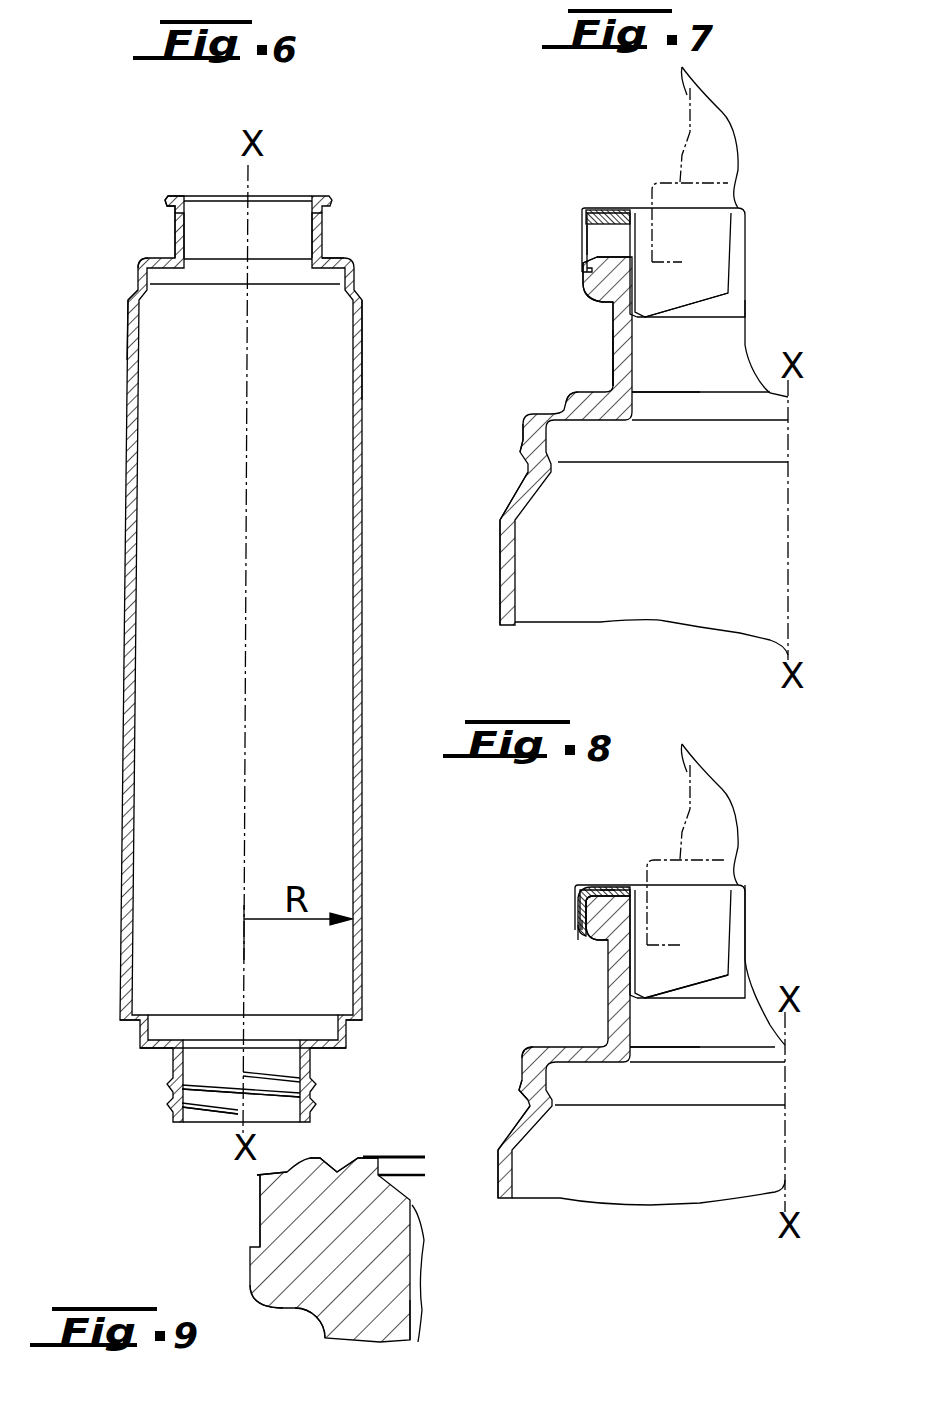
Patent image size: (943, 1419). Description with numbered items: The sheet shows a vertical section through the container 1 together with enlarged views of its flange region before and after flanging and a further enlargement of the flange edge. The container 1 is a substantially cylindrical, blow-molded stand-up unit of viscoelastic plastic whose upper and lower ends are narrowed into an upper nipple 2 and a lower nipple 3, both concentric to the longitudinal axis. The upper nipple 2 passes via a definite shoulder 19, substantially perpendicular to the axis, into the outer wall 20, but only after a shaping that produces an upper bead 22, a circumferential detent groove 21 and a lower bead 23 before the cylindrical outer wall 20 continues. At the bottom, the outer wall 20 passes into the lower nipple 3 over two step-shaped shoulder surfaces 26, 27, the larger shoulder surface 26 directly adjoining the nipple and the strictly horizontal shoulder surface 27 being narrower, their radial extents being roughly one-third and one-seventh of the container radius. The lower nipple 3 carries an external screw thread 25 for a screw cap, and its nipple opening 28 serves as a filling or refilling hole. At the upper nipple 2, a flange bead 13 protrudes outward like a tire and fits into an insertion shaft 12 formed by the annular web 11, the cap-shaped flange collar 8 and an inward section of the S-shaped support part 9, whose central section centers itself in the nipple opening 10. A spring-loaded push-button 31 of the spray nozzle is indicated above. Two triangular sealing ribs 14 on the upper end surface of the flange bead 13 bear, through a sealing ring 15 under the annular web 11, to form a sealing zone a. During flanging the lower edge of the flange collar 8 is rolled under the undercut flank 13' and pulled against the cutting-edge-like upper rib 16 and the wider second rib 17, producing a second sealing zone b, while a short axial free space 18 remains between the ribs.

In FIG. 6, the container 1 is at (112, 650).
In FIG. 7, the container 1 is at (482, 586).
In FIG. 6, the upper nipple 2 is at (175, 228).
In FIG. 7, the upper nipple 2 is at (610, 362).
In FIG. 9, the upper nipple 2 is at (378, 1325).
In FIG. 6, the lower nipple 3 is at (180, 1082).
In FIG. 7, the flange collar 8 is at (582, 237).
In FIG. 8, the flange collar 8 is at (580, 933).
In FIG. 7, the support part 9 is at (673, 303).
In FIG. 8, the support part 9 is at (680, 980).
In FIG. 6, the nipple opening 10 is at (228, 222).
In FIG. 7, the nipple opening 10 is at (673, 358).
In FIG. 8, the nipple opening 10 is at (710, 1025).
In FIG. 9, the nipple opening 10 is at (415, 1233).
In FIG. 7, the annular web 11 is at (608, 208).
In FIG. 8, the annular web 11 is at (588, 885).
In FIG. 9, the annular web 11 is at (394, 1166).
In FIG. 7, the insertion shaft 12 is at (593, 238).
In FIG. 6, the flange bead 13 is at (146, 154).
In FIG. 7, the flange bead 13 is at (525, 309).
In FIG. 8, the flange bead 13 is at (541, 873).
In FIG. 9, the flange bead 13 is at (376, 1250).
In FIG. 7, the undercut flank 13' is at (530, 357).
In FIG. 9, the undercut flank 13' is at (295, 1340).
In FIG. 7, the sealing rib 14 is at (592, 257).
In FIG. 9, the sealing rib 14 is at (312, 1165).
In FIG. 7, the sealing ring 15 is at (620, 210).
In FIG. 7, the upper rib 16 is at (587, 263).
In FIG. 9, the upper rib 16 is at (257, 1176).
In FIG. 7, the second rib 17 is at (592, 296).
In FIG. 9, the second rib 17 is at (250, 1278).
In FIG. 8, the free space 18 is at (576, 913).
In FIG. 9, the free space 18 is at (250, 1222).
In FIG. 6, the shoulder 19 is at (330, 254).
In FIG. 7, the shoulder 19 is at (655, 393).
In FIG. 8, the shoulder 19 is at (543, 1046).
In FIG. 6, the outer wall 20 is at (360, 335).
In FIG. 7, the outer wall 20 is at (500, 618).
In FIG. 8, the outer wall 20 is at (507, 1172).
In FIG. 6, the detent groove 21 is at (137, 282).
In FIG. 7, the detent groove 21 is at (530, 438).
In FIG. 8, the detent groove 21 is at (528, 1097).
In FIG. 6, the upper bead 22 is at (140, 265).
In FIG. 7, the upper bead 22 is at (573, 392).
In FIG. 8, the upper bead 22 is at (518, 1060).
In FIG. 6, the lower bead 23 is at (130, 300).
In FIG. 7, the lower bead 23 is at (525, 480).
In FIG. 8, the lower bead 23 is at (500, 1140).
In FIG. 6, the external screw thread 25 is at (212, 1067).
In FIG. 6, the shoulder surface 26 is at (172, 1057).
In FIG. 6, the shoulder surface 27 is at (125, 1020).
In FIG. 6, the nipple opening 28 is at (182, 1107).
In FIG. 7, the push-button 31 is at (707, 133).
In FIG. 8, the push-button 31 is at (703, 837).
In FIG. 8, the sealing zone a is at (603, 886).
In FIG. 8, the second sealing zone b is at (593, 927).